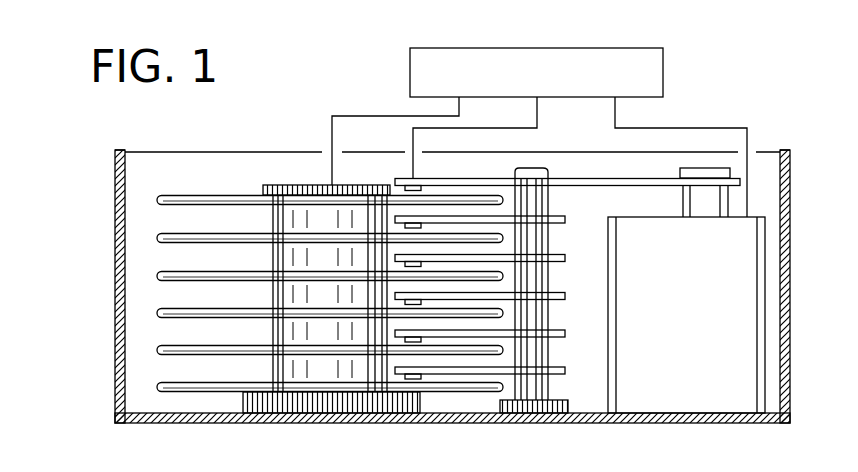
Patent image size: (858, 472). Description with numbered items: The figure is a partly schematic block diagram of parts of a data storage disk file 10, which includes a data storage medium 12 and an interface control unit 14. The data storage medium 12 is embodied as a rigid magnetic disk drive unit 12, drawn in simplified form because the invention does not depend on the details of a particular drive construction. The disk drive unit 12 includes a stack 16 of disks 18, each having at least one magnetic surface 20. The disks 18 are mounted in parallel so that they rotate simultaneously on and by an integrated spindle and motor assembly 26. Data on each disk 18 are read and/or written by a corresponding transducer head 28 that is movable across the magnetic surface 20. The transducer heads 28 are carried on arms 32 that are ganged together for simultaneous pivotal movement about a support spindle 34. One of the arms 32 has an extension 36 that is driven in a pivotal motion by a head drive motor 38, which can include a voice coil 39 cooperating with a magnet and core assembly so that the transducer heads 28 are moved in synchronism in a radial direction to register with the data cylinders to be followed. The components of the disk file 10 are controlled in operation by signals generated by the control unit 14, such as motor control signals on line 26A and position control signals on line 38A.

The data storage disk file 10 is at (748, 98).
The data storage medium 12 is at (290, 132).
The interface control unit 14 is at (665, 72).
The stack 16 is at (230, 188).
The disks 18 is at (158, 313).
The magnetic surface 20 is at (170, 193).
The integrated spindle and motor assembly 26 is at (327, 362).
The line 26A is at (368, 116).
The transducer head 28 is at (410, 185).
The arms 32 is at (562, 296).
The support spindle 34 is at (530, 390).
The extension 36 is at (608, 178).
The head drive motor 38 is at (678, 382).
The line 38A is at (657, 128).
The voice coil 39 is at (730, 205).